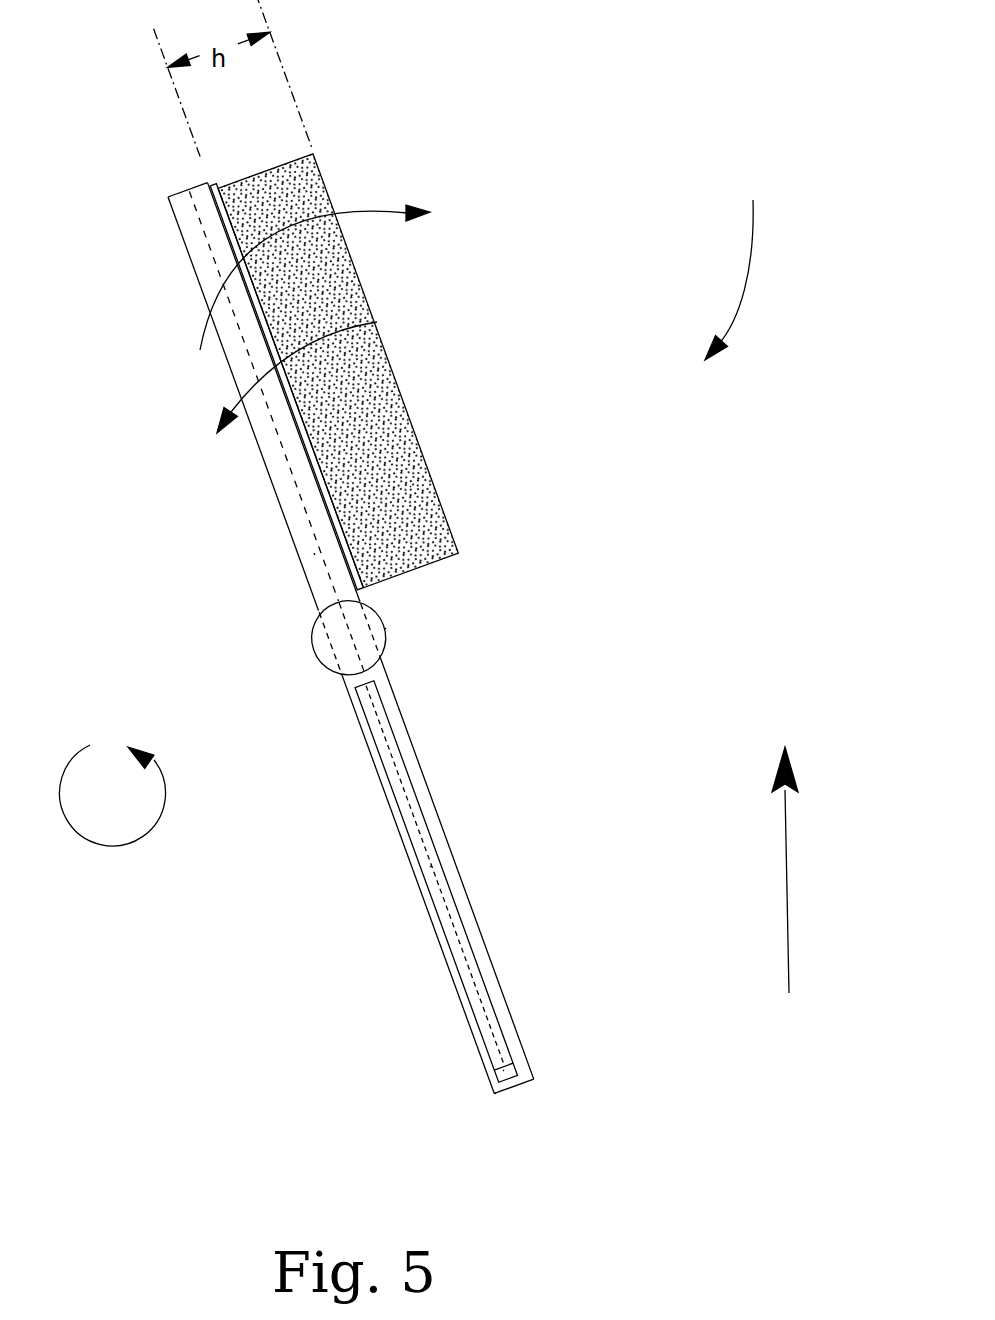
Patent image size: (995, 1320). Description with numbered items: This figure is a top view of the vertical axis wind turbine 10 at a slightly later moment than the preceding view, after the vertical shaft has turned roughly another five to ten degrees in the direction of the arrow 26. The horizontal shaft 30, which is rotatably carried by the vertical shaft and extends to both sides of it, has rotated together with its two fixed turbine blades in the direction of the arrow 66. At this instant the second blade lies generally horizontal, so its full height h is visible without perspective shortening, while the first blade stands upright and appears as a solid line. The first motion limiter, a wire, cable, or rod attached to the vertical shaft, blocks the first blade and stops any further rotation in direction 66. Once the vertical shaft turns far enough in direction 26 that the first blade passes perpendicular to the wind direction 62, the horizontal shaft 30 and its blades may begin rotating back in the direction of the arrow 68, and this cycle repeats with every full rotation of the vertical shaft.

The vertical axis wind turbine 10 is at (739, 259).
The arrow 26 is at (85, 845).
The horizontal shaft 30 is at (366, 550).
The wind direction 62 is at (787, 893).
The arrow 66 is at (358, 214).
The arrow 68 is at (417, 323).